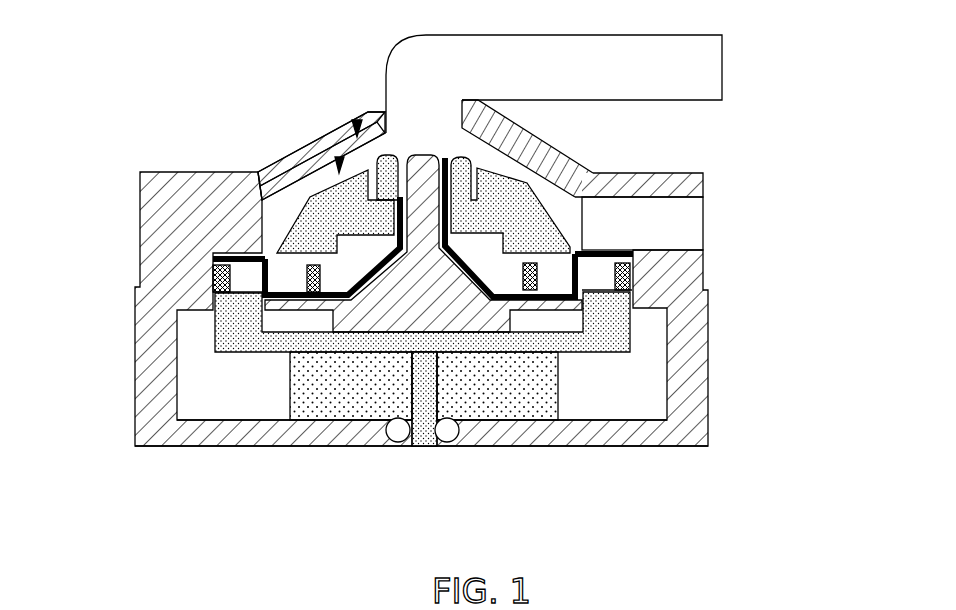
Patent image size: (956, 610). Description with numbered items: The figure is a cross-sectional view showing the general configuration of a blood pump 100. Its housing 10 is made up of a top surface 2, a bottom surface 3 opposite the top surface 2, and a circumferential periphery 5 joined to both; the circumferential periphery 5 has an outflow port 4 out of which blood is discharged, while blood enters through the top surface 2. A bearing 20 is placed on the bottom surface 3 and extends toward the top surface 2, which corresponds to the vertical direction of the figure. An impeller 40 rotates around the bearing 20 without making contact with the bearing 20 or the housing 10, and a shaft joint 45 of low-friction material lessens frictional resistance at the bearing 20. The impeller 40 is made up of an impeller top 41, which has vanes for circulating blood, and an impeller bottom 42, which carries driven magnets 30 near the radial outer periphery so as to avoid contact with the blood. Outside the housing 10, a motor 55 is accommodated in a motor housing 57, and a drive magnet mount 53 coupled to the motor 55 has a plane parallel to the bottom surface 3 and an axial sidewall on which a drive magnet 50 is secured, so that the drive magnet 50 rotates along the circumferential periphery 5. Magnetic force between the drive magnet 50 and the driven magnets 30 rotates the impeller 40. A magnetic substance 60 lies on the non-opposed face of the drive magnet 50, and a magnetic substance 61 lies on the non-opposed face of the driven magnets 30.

The blood pump 100 is at (434, 288).
The housing 10 is at (358, 118).
The top surface 2 is at (567, 148).
The bearing 20 is at (432, 160).
The outflow port 4 is at (667, 209).
The circumferential periphery 5 is at (200, 230).
The driven magnets 30 is at (264, 250).
The impeller 40 is at (315, 133).
The impeller top 41 is at (327, 135).
The impeller bottom 42 is at (300, 180).
The shaft joint 45 is at (357, 118).
The drive magnet 50 is at (212, 255).
The magnetic substance 60 is at (222, 278).
The magnetic substance 61 is at (290, 395).
The motor 55 is at (330, 347).
The drive magnet mount 53 is at (395, 441).
The motor housing 57 is at (205, 452).
The bottom surface 3 is at (540, 312).